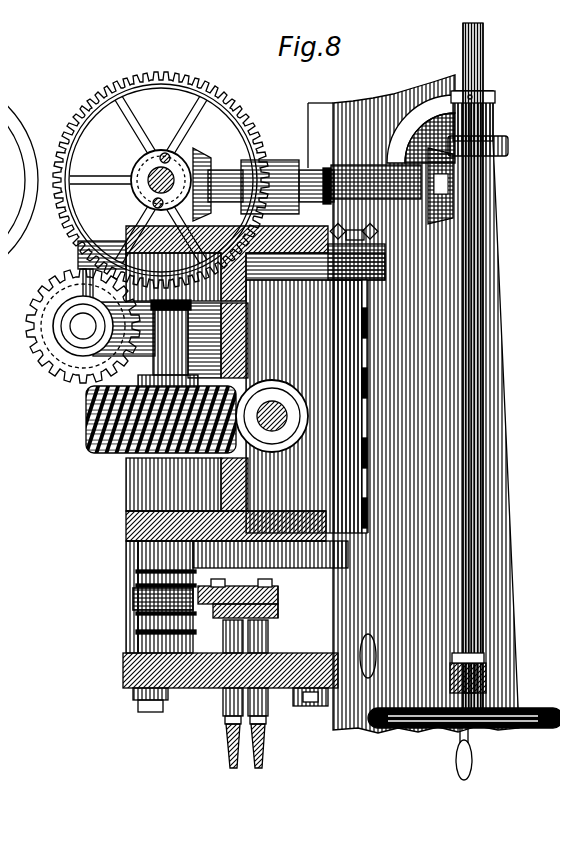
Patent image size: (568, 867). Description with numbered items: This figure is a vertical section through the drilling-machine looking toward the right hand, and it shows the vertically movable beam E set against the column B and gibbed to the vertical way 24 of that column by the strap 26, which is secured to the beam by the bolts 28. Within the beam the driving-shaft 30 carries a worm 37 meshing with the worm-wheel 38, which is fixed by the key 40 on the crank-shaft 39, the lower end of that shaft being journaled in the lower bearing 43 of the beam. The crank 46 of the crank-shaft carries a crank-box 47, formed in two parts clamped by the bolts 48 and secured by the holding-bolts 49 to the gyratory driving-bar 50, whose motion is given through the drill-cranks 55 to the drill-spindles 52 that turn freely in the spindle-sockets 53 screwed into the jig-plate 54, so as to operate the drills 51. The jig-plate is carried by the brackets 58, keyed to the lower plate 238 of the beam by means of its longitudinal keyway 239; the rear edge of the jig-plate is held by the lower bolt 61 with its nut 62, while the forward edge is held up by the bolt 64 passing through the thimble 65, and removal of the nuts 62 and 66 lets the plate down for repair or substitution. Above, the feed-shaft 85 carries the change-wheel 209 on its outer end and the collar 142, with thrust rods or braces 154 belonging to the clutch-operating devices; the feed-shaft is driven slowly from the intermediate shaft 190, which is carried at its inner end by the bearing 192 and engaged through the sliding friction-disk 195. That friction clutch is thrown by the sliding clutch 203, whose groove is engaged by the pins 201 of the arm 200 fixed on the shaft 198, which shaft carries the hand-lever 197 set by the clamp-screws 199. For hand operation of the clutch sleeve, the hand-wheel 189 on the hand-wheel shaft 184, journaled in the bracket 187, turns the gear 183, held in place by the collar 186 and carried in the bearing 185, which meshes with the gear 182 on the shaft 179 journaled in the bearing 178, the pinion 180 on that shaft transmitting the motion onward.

The change-wheel 209 is at (78, 104).
The thrust rods or braces 154 is at (157, 145).
The feed-shaft 85 is at (141, 166).
The pinion 180 is at (205, 160).
The bearing 178 is at (272, 165).
The vertical way 24 is at (312, 110).
The collar 186 is at (452, 90).
The bearing 185 is at (462, 110).
The hand-wheel shaft 184 is at (476, 33).
The gear 183 is at (490, 135).
The shaft 179 is at (437, 176).
The gear 182 is at (438, 192).
The shaft 198 is at (70, 255).
The clamp-screws 199 is at (255, 262).
The strap 26 is at (335, 343).
The column B is at (478, 350).
The bolts 28 is at (356, 462).
The hand-lever 197 is at (358, 500).
The bracket 187 is at (480, 672).
The hand-wheel 189 is at (530, 720).
The crank-shaft 39 is at (172, 293).
The collar 142 is at (172, 305).
The intermediate shaft 190 is at (83, 326).
The bearing 192 is at (124, 329).
The arm 200 is at (55, 295).
The pins 201 is at (45, 313).
The sliding clutch 203 is at (55, 330).
The sliding friction-disk 195 is at (52, 370).
The worm-wheel 38 is at (86, 410).
The driving-shaft 30 is at (264, 394).
The worm 37 is at (272, 428).
The lower bearing 43 is at (135, 482).
The lower plate 238 is at (118, 510).
The movable beam E is at (118, 520).
The keyway 239 is at (118, 532).
The bracket 58 is at (120, 549).
The crank-box 47 is at (130, 571).
The bolts 48 is at (128, 592).
The crank 46 is at (130, 628).
The key 40 is at (16, 642).
The holding-bolts 49 is at (225, 582).
The thimble 65 is at (284, 596).
The drill-crank 55 is at (222, 628).
The gyratory driving-bar 50 is at (258, 620).
The jig-plate 54 is at (118, 660).
The nut 62 is at (130, 688).
The lower bolt 61 is at (145, 705).
The spindle-socket 53 is at (222, 700).
The drill-spindle 52 is at (220, 714).
The drill 51 is at (250, 756).
The nut 66 is at (287, 704).
The bolt 64 is at (302, 700).